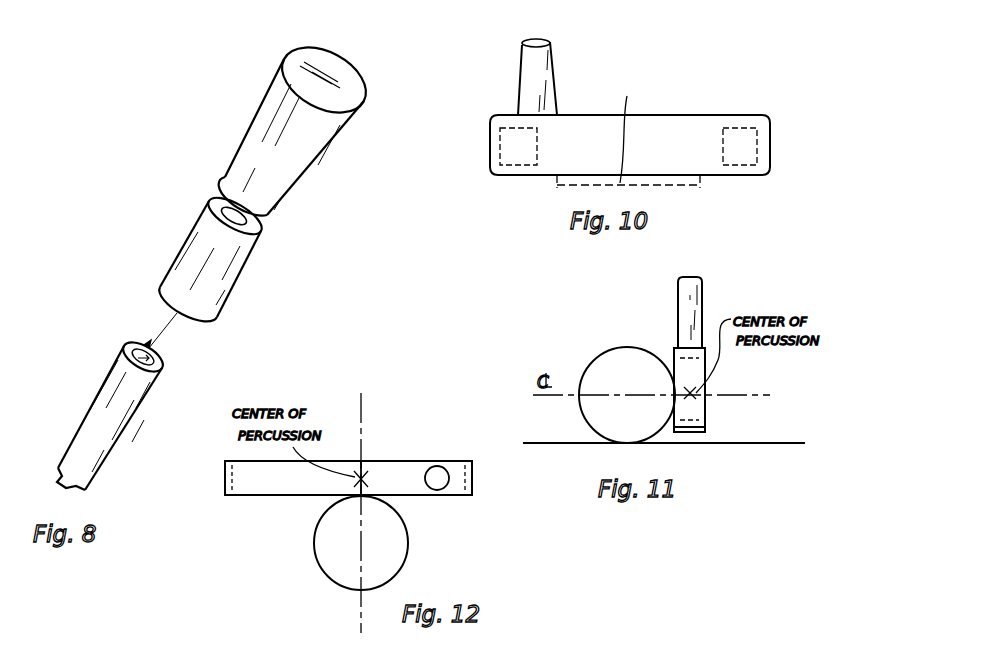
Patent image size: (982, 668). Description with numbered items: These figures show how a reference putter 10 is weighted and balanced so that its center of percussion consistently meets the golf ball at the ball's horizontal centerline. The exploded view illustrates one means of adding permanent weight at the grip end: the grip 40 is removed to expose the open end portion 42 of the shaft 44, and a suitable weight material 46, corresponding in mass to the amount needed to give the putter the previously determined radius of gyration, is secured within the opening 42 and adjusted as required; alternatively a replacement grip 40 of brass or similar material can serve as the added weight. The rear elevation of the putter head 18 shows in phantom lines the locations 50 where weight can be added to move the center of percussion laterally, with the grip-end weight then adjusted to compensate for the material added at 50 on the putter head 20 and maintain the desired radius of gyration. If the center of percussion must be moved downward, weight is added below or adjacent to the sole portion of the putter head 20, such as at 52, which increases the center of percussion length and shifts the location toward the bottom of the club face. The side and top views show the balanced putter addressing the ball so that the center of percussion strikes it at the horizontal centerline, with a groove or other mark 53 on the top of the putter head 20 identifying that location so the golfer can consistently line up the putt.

In FIG. 10, the reference putter 10 is at (629, 123).
In FIG. 10, the putter head 18 is at (550, 165).
In FIG. 10, the putter head 20 is at (770, 125).
In FIG. 11, the putter head 20 is at (706, 405).
In FIG. 12, the putter head 20 is at (472, 479).
In FIG. 8, the grip 40 is at (243, 121).
In FIG. 8, the open end portion 42 is at (165, 362).
In FIG. 8, the shaft 44 is at (135, 404).
In FIG. 8, the weight material 46 is at (138, 352).
In FIG. 10, the weight locations 50 is at (500, 147).
In FIG. 10, the sole weight location 52 is at (628, 130).
In FIG. 12, the mark 53 is at (368, 476).